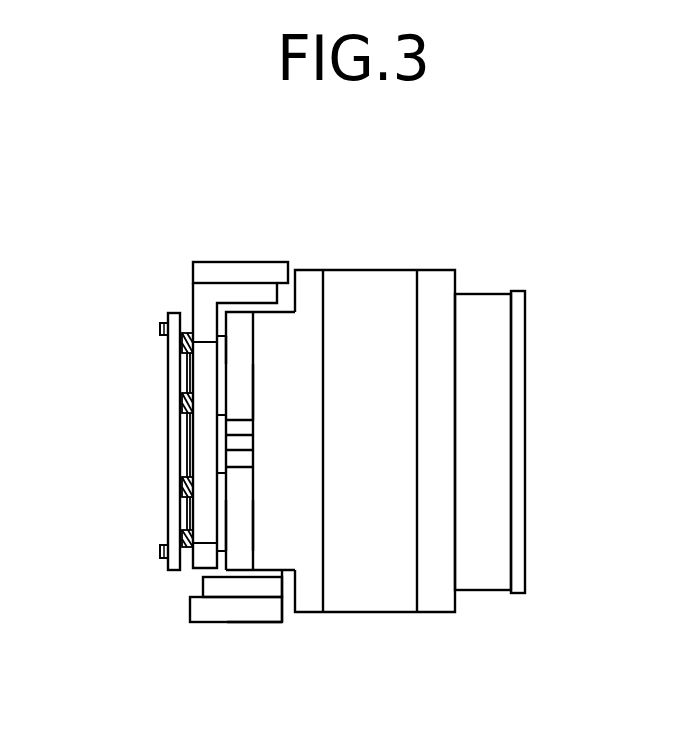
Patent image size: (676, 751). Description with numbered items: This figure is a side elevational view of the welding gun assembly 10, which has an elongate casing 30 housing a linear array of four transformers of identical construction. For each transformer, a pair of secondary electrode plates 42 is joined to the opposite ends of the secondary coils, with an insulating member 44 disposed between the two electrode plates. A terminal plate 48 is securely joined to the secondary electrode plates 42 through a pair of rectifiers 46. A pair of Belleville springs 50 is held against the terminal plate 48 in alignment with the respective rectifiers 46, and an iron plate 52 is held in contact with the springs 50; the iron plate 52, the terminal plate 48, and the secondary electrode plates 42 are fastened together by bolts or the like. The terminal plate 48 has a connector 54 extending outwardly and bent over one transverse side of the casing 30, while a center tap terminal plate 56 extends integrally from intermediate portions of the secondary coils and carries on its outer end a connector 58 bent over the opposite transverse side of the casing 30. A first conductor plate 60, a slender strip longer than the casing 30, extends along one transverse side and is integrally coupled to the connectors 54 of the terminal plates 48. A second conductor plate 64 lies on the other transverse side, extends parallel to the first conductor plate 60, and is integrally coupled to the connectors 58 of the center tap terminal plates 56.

The welding gun assembly 10 is at (336, 174).
The casing 30 is at (375, 297).
The secondary electrode plates 42 is at (242, 383).
The insulating member 44 is at (247, 443).
The rectifiers 46 is at (224, 362).
The terminal plate 48 is at (205, 470).
The Belleville springs 50 is at (190, 381).
The iron plate 52 is at (173, 437).
The connector 54 is at (247, 293).
The center tap terminal plate 56 is at (268, 573).
The connector 58 is at (220, 593).
The first conductor plate 60 is at (205, 272).
The second conductor plate 64 is at (255, 615).